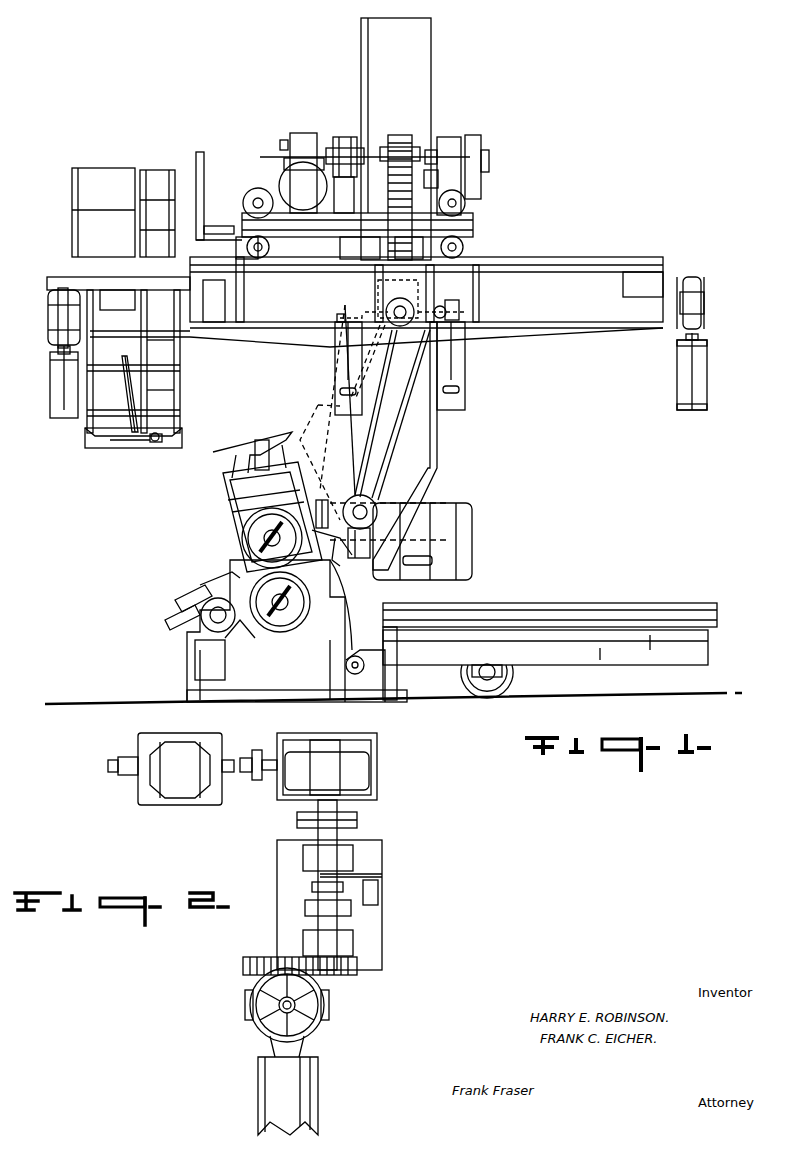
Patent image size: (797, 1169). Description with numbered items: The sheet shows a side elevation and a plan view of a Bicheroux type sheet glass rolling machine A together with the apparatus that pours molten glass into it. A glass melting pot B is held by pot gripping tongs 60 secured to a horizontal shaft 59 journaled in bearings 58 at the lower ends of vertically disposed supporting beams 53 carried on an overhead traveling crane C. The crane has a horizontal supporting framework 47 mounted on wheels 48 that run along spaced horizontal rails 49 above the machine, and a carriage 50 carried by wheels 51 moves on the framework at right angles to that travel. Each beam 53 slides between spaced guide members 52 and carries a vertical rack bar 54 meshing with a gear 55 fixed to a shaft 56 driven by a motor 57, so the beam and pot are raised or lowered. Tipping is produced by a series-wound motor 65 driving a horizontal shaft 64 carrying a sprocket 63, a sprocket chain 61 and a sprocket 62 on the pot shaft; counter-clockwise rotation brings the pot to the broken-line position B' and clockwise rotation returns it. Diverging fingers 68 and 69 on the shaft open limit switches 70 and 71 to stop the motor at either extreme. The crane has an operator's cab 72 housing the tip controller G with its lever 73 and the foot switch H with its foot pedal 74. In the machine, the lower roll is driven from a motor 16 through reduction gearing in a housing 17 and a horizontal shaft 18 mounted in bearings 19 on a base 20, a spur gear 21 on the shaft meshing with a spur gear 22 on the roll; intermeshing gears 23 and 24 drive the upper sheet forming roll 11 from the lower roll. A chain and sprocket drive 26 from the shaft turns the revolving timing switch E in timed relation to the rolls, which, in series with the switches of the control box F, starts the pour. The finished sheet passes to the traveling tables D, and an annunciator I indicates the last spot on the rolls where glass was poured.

In FIG. 2, the upper sheet forming roll 11 is at (276, 1086).
In FIG. 2, the motor 16 is at (175, 800).
In FIG. 2, the housing 17 is at (355, 760).
In FIG. 2, the horizontal shaft 18 is at (312, 896).
In FIG. 2, the bearings 19 is at (335, 856).
In FIG. 2, the platform or base 20 is at (372, 920).
In FIG. 2, the spur gear 21 is at (334, 978).
In FIG. 2, the spur gear 22 is at (243, 966).
In FIG. 1, the gear 23 is at (290, 630).
In FIG. 1, the gear 24 is at (240, 548).
In FIG. 2, the chain and sprocket drive 26 is at (362, 872).
In FIG. 1, the horizontal supporting framework 47 is at (577, 318).
In FIG. 1, the wheels 48 is at (58, 306).
In FIG. 1, the horizontal rails 49 is at (56, 348).
In FIG. 1, the carriage 50 is at (284, 238).
In FIG. 1, the wheels 51 is at (266, 262).
In FIG. 1, the guide member 52 is at (466, 360).
In FIG. 1, the supporting beam 53 is at (425, 430).
In FIG. 1, the vertical rack bar 54 is at (386, 236).
In FIG. 1, the gear 55 is at (410, 145).
In FIG. 1, the shaft 56 is at (358, 158).
In FIG. 1, the motor 57 is at (286, 182).
In FIG. 1, the bearing 58 is at (374, 500).
In FIG. 1, the horizontal shaft 59 is at (372, 518).
In FIG. 1, the pot gripping tongs 60 is at (412, 566).
In FIG. 1, the sprocket chain 61 is at (388, 440).
In FIG. 1, the sprocket 62 is at (345, 480).
In FIG. 1, the sprocket 63 is at (372, 350).
In FIG. 1, the horizontal shaft 64 is at (386, 304).
In FIG. 1, the series-wound motor 65 is at (400, 360).
In FIG. 1, the finger 68 is at (386, 290).
In FIG. 1, the finger 69 is at (436, 306).
In FIG. 1, the limit switch 70 is at (336, 316).
In FIG. 1, the limit switch 71 is at (462, 316).
In FIG. 1, the operator's cab 72 is at (182, 378).
In FIG. 1, the lever 73 is at (128, 388).
In FIG. 1, the foot pedal 74 is at (154, 442).
In FIG. 1, the sheet glass rolling machine A is at (268, 698).
In FIG. 1, the glass melting pot B is at (412, 541).
In FIG. 1, the tipped pot position B' is at (309, 455).
In FIG. 1, the overhead traveling crane C is at (535, 258).
In FIG. 1, the traveling tables D is at (572, 666).
In FIG. 2, the revolving timing switch E is at (378, 892).
In FIG. 1, the control box F is at (326, 492).
In FIG. 1, the tip controller G is at (128, 448).
In FIG. 1, the foot switch H is at (158, 436).
In FIG. 1, the annunciator I is at (332, 548).